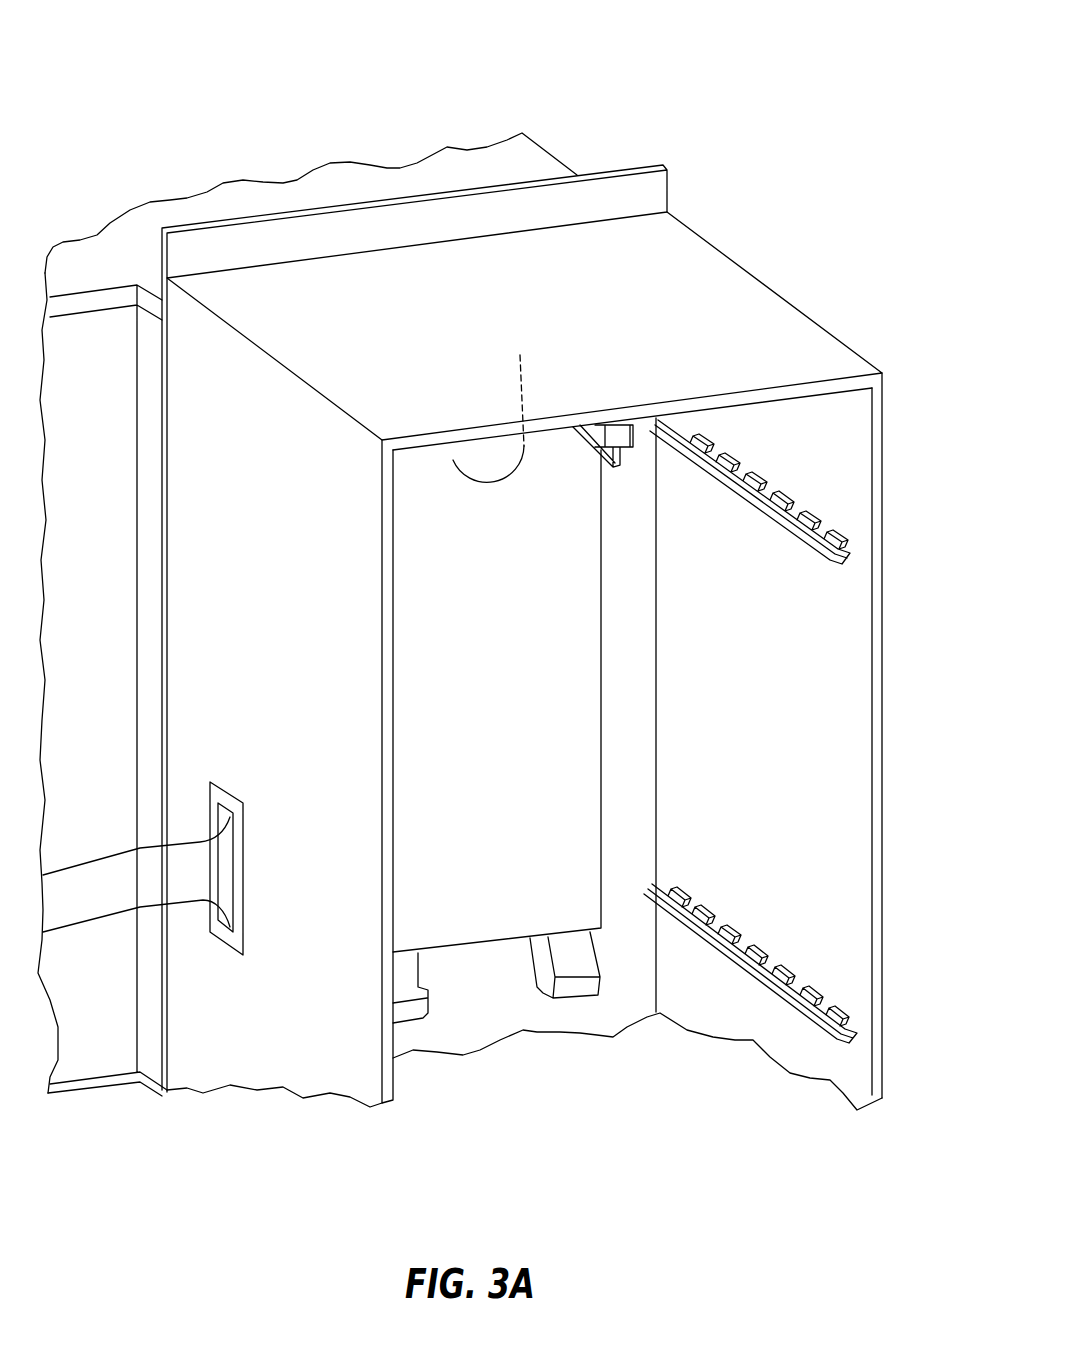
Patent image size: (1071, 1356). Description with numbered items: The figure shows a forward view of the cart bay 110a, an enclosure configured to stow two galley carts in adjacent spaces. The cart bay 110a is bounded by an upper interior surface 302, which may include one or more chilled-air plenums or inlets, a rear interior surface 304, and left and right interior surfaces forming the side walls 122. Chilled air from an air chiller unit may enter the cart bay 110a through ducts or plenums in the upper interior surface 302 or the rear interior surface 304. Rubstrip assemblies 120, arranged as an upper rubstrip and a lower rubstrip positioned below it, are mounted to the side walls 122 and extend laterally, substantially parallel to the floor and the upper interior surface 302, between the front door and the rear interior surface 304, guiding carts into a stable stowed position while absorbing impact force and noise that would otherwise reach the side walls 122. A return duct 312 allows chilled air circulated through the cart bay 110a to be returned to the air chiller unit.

The cart bay 110a is at (113, 40).
The rubstrip assembly 120 is at (758, 480).
The side wall 122 is at (297, 785).
The upper interior surface 302 is at (453, 460).
The rear interior surface 304 is at (550, 770).
The return duct 312 is at (88, 887).